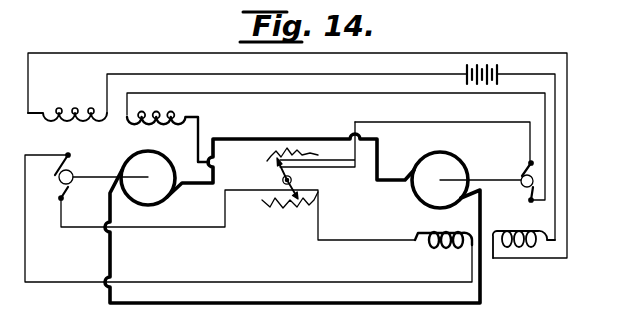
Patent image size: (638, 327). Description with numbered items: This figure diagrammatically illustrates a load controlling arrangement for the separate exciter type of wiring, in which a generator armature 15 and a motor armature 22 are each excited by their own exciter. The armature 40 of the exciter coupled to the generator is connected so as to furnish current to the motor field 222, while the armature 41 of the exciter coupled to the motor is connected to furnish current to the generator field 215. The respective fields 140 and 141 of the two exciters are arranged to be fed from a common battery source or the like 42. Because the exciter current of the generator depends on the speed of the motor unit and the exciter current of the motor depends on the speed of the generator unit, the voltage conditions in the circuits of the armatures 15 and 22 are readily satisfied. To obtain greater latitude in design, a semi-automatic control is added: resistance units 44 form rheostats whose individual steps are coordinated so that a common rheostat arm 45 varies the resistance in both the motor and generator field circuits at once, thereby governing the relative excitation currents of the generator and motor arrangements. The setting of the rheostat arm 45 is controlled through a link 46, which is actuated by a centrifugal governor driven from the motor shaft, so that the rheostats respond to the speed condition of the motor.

The field 140 is at (73, 111).
The generator field 215 is at (168, 128).
The battery source 42 is at (498, 77).
The armature 15 is at (162, 206).
The armature 22 is at (453, 146).
The armature of the exciter coupled to the generator 40 is at (56, 182).
The armature of the exciter coupled to the motor 41 is at (517, 190).
The link 46 is at (330, 170).
The rheostat arm 45 is at (296, 181).
The resistance units 44 is at (268, 163).
The motor field 222 is at (443, 252).
The field 141 is at (529, 263).